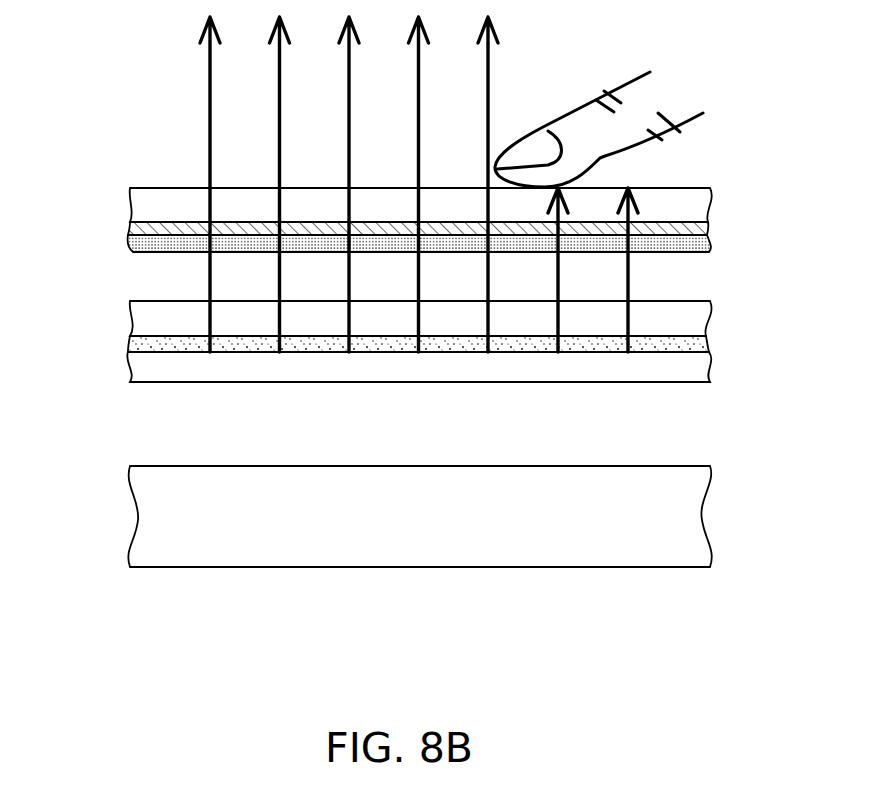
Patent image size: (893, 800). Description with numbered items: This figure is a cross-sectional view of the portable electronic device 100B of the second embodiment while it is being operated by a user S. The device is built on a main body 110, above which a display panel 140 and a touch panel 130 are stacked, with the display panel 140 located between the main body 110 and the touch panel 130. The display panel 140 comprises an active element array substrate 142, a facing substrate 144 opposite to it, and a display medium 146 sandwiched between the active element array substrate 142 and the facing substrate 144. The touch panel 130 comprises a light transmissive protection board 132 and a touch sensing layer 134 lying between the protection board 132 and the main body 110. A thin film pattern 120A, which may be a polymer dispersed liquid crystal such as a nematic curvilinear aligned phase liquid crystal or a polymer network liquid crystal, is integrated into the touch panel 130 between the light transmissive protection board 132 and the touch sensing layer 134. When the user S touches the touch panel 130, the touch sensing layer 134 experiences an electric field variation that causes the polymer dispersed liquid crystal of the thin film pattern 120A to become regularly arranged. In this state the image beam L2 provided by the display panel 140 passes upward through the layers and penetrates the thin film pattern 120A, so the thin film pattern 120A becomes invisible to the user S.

The touch display device 100B is at (748, 645).
The main body 110 is at (168, 522).
The thin film pattern 120A is at (700, 234).
The touch panel 130 is at (66, 190).
The light transmissive protection board 132 is at (160, 205).
The touch sensing layer 134 is at (132, 249).
The display panel 140 is at (66, 295).
The active element array substrate 142 is at (152, 370).
The facing substrate 144 is at (153, 318).
The display medium 146 is at (131, 338).
The image beam L2 is at (208, 133).
The user S is at (695, 121).